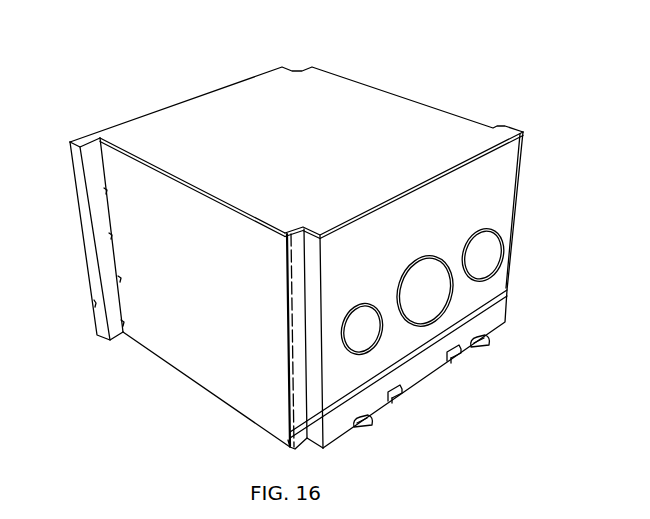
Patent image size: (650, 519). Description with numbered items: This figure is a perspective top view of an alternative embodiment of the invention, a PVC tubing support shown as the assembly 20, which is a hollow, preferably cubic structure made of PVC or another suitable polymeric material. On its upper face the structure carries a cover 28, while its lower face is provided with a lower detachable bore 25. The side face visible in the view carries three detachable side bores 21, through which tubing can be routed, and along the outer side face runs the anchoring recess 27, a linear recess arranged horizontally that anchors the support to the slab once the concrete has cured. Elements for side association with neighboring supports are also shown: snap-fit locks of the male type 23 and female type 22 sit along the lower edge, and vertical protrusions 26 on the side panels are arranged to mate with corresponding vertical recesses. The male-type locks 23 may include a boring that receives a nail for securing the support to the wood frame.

The housing assembly 20 is at (475, 61).
The detachable side bore 21 is at (358, 338).
The female snap-fit lock 22 is at (400, 397).
The male snap-fit lock 23 is at (372, 424).
The lower detachable bore 25 is at (293, 58).
The vertical protrusion 26 is at (72, 152).
The anchoring recess 27 is at (290, 440).
The cover 28 is at (197, 115).